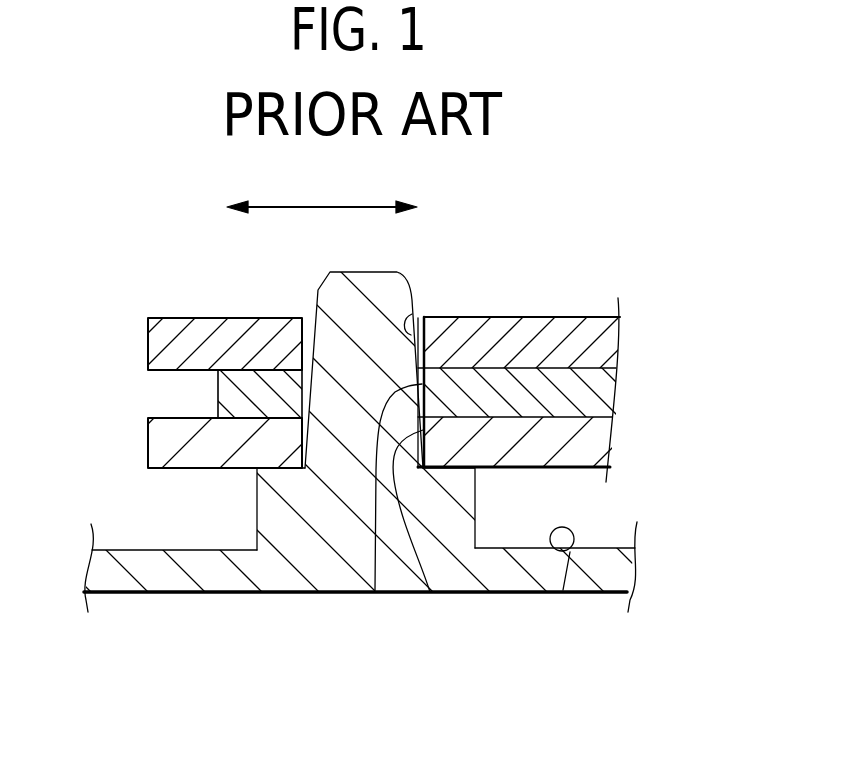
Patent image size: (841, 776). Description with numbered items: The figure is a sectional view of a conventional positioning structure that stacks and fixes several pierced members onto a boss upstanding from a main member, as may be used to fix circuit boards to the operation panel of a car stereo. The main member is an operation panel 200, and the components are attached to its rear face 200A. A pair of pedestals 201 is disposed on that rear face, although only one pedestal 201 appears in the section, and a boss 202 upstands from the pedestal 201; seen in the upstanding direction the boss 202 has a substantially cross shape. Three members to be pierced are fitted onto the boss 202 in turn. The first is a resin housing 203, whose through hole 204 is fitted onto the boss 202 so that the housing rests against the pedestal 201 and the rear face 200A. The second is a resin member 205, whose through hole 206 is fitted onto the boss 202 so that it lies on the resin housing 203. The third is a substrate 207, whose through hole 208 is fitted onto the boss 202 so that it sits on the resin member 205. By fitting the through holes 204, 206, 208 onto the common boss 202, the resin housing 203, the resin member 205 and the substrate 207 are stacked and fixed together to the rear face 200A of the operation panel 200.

The operation panel 200 is at (172, 592).
The rear face of the operation panel 200A is at (563, 590).
The pedestal 201 is at (257, 512).
The boss 202 is at (405, 282).
The resin housing 203 is at (152, 440).
The through hole of the resin housing 204 is at (430, 592).
The resin member 205 is at (226, 393).
The through hole of the resin member 206 is at (375, 590).
The substrate 207 is at (152, 342).
The through hole of the substrate 208 is at (413, 313).